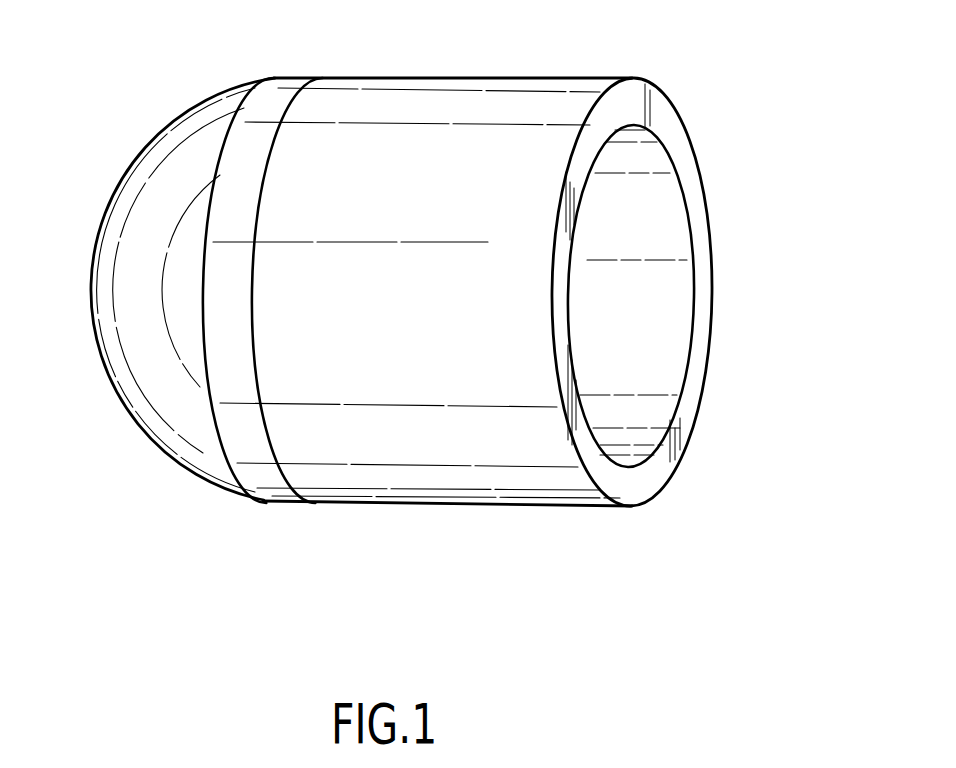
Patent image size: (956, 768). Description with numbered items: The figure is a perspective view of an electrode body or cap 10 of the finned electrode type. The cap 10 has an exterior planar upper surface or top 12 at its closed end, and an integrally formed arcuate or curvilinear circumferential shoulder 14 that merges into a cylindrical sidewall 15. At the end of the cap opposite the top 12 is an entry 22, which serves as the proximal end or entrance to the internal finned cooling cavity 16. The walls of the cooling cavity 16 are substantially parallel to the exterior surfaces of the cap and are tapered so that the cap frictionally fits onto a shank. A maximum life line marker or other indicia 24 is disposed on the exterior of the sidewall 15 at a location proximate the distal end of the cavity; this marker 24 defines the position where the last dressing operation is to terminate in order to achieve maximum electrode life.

The electrode cap 10 is at (553, 56).
The top 12 is at (90, 284).
The circumferential shoulder 14 is at (213, 488).
The cylindrical sidewall 15 is at (557, 509).
The finned cooling cavity 16 is at (679, 221).
The entry 22 is at (656, 451).
The maximum life line marker 24 is at (335, 71).